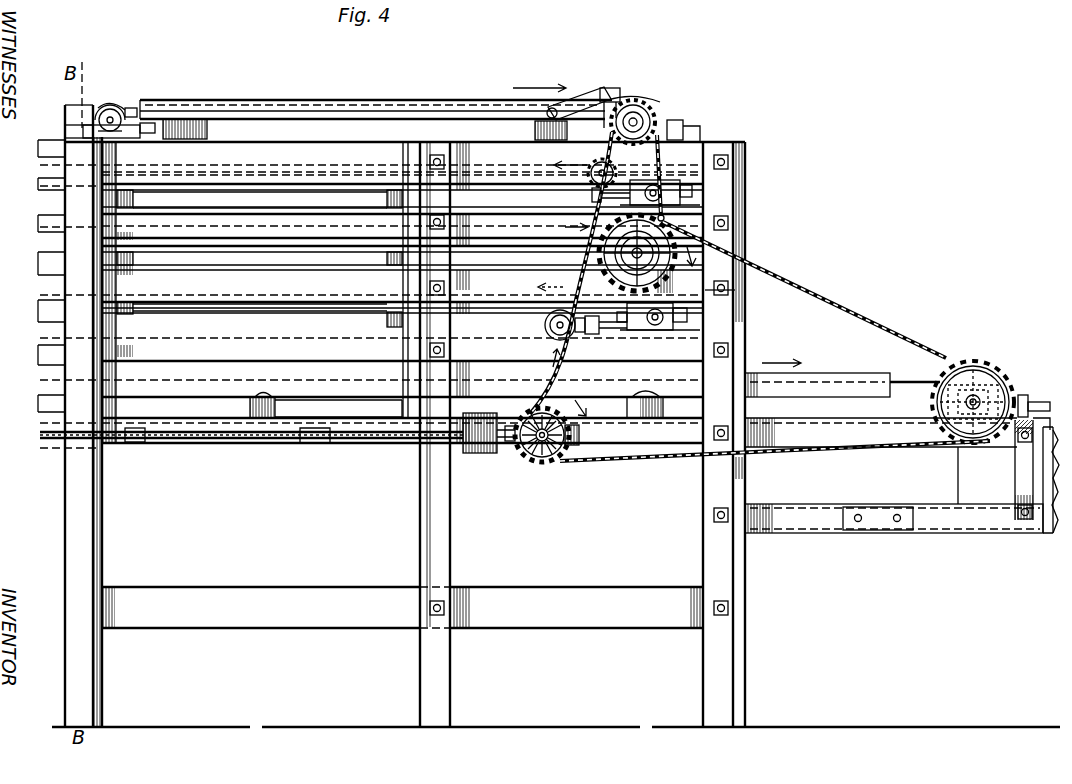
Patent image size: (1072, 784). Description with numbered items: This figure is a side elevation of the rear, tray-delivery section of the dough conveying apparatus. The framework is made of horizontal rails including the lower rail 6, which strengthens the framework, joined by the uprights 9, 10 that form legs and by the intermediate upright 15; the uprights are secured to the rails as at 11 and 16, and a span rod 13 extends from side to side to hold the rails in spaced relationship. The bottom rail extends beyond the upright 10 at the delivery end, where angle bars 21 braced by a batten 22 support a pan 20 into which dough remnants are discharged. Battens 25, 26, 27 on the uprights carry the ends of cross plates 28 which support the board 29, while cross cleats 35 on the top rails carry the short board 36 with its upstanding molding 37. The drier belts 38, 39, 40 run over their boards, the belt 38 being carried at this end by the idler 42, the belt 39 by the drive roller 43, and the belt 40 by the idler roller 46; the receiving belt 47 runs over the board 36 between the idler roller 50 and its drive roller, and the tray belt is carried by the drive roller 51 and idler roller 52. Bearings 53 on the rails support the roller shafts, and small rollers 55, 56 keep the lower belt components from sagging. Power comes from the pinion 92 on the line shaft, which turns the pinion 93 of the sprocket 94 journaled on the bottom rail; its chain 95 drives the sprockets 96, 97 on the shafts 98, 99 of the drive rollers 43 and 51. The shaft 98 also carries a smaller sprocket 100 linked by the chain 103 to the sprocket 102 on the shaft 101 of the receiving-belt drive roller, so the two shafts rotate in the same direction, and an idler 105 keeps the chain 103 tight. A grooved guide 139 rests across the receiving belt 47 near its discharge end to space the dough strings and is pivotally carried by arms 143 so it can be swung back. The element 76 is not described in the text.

The lower rail 6 is at (188, 596).
The upright 9 is at (92, 533).
The upright 10 is at (715, 558).
The securing means 11 is at (745, 156).
The span rod 13 is at (745, 144).
The upright 15 is at (420, 572).
The securing means 16 is at (436, 156).
The pan 20 is at (1047, 425).
The angle bar 21 is at (940, 521).
The batten 22 is at (843, 521).
The batten 25 is at (1022, 483).
The batten 26 is at (112, 440).
The batten 27 is at (402, 410).
The cross plate 28 is at (132, 255).
The board 29 is at (328, 192).
The cross cleat 35 is at (202, 121).
The board 36 is at (255, 119).
The molding 37 is at (333, 100).
The drier belt 38 is at (342, 176).
The drier belt 39 is at (573, 243).
The drier belt 40 is at (533, 307).
The idler 42 is at (733, 140).
The drive roller 43 is at (700, 268).
The idler roller 46 is at (677, 303).
The receiving belt 47 is at (113, 108).
The idler roller 50 is at (125, 117).
The drive roller 51 is at (283, 305).
The idler roller 52 is at (863, 391).
The bearing 53 is at (737, 300).
The small roller 55 is at (106, 110).
The small roller 56 is at (663, 400).
The collar 76 is at (318, 440).
The pinion 92 is at (510, 449).
The pinion 93 is at (538, 460).
The sprocket 94 is at (563, 466).
The chain 95 is at (790, 450).
The sprocket 96 is at (735, 246).
The sprocket 97 is at (975, 386).
The shaft 98 is at (680, 268).
The shaft 99 is at (1027, 375).
The sprocket 100 is at (652, 250).
The shaft 101 is at (634, 121).
The sprocket 102 is at (655, 124).
The chain 103 is at (668, 131).
The idler 105 is at (588, 178).
The guide 139 is at (612, 88).
The arm 143 is at (584, 103).